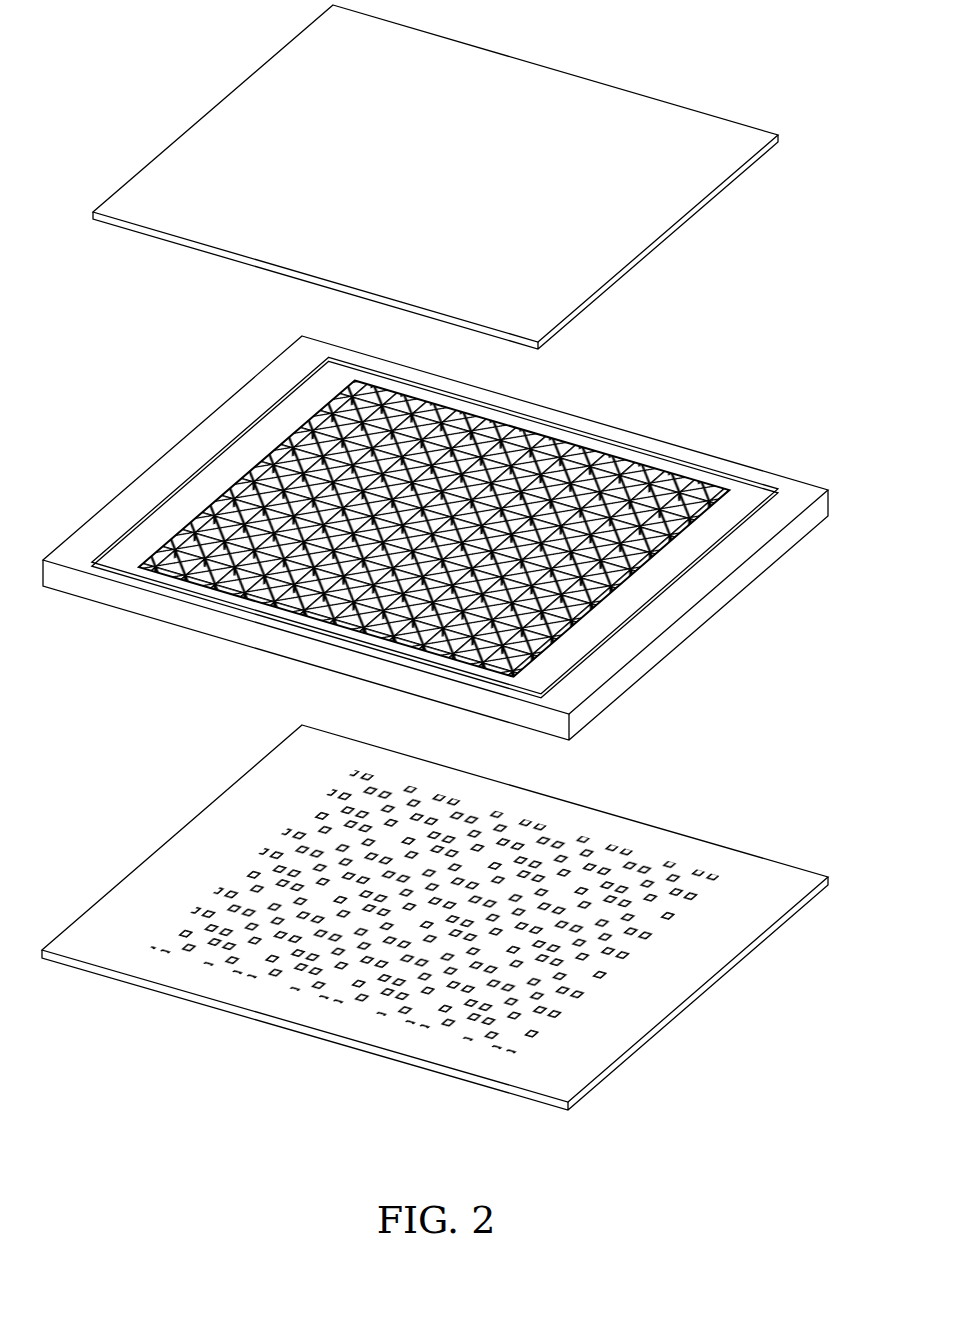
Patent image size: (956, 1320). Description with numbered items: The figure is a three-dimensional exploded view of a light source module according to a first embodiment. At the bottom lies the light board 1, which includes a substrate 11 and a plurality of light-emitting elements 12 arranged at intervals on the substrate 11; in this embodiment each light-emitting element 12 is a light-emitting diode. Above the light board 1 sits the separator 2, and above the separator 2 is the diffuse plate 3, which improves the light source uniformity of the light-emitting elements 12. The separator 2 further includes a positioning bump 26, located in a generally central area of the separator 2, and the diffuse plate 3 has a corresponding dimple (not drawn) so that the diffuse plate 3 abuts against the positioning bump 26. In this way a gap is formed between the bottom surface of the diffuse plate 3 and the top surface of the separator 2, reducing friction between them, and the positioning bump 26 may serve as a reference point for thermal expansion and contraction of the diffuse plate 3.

The light board 1 is at (435, 937).
The substrate 11 is at (627, 1025).
The light-emitting elements 12 is at (670, 860).
The separator 2 is at (435, 538).
The positioning bump 26 is at (445, 555).
The diffuse plate 3 is at (700, 250).